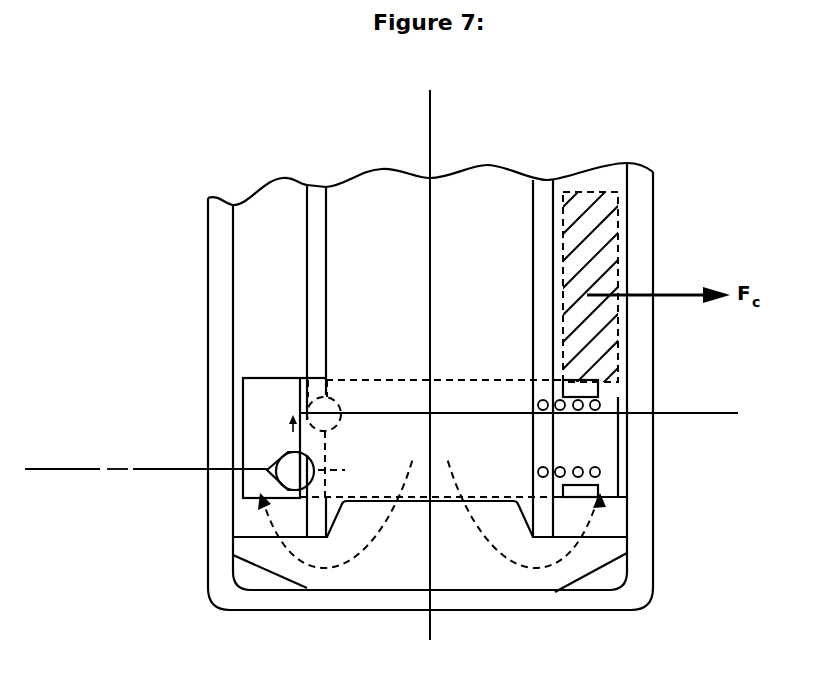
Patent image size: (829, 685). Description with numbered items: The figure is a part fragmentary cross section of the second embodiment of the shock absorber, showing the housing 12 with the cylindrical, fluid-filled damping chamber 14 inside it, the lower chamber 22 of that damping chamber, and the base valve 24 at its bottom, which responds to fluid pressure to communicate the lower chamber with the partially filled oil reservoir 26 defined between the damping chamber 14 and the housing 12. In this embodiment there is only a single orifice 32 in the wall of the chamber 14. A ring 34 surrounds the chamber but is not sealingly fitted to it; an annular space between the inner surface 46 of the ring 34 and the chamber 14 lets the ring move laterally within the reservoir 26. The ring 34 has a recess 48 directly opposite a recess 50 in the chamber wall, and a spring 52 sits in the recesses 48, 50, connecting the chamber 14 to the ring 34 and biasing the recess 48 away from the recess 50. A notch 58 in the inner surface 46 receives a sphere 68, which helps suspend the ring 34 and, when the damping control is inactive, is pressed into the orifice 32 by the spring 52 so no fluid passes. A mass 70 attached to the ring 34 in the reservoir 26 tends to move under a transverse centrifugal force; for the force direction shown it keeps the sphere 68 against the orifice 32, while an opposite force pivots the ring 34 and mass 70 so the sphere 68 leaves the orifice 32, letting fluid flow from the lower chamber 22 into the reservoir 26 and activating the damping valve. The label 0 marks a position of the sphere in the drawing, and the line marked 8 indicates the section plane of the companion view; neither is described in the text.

The housing 12 is at (638, 195).
The damping chamber 14 is at (543, 255).
The lower chamber 22 is at (483, 187).
The base valve 24 is at (455, 563).
The oil reservoir 26 is at (625, 318).
The orifice 32 is at (312, 458).
The ring 34 is at (573, 473).
The inner surface 46 is at (565, 388).
The recess 48 is at (577, 425).
The recess 50 is at (547, 432).
The spring 52 is at (607, 457).
The notch 58 is at (288, 448).
The sphere 68 is at (283, 477).
The mass 70 is at (605, 272).
The zero position 0 is at (338, 455).
The section line 8- 8 is at (53, 495).